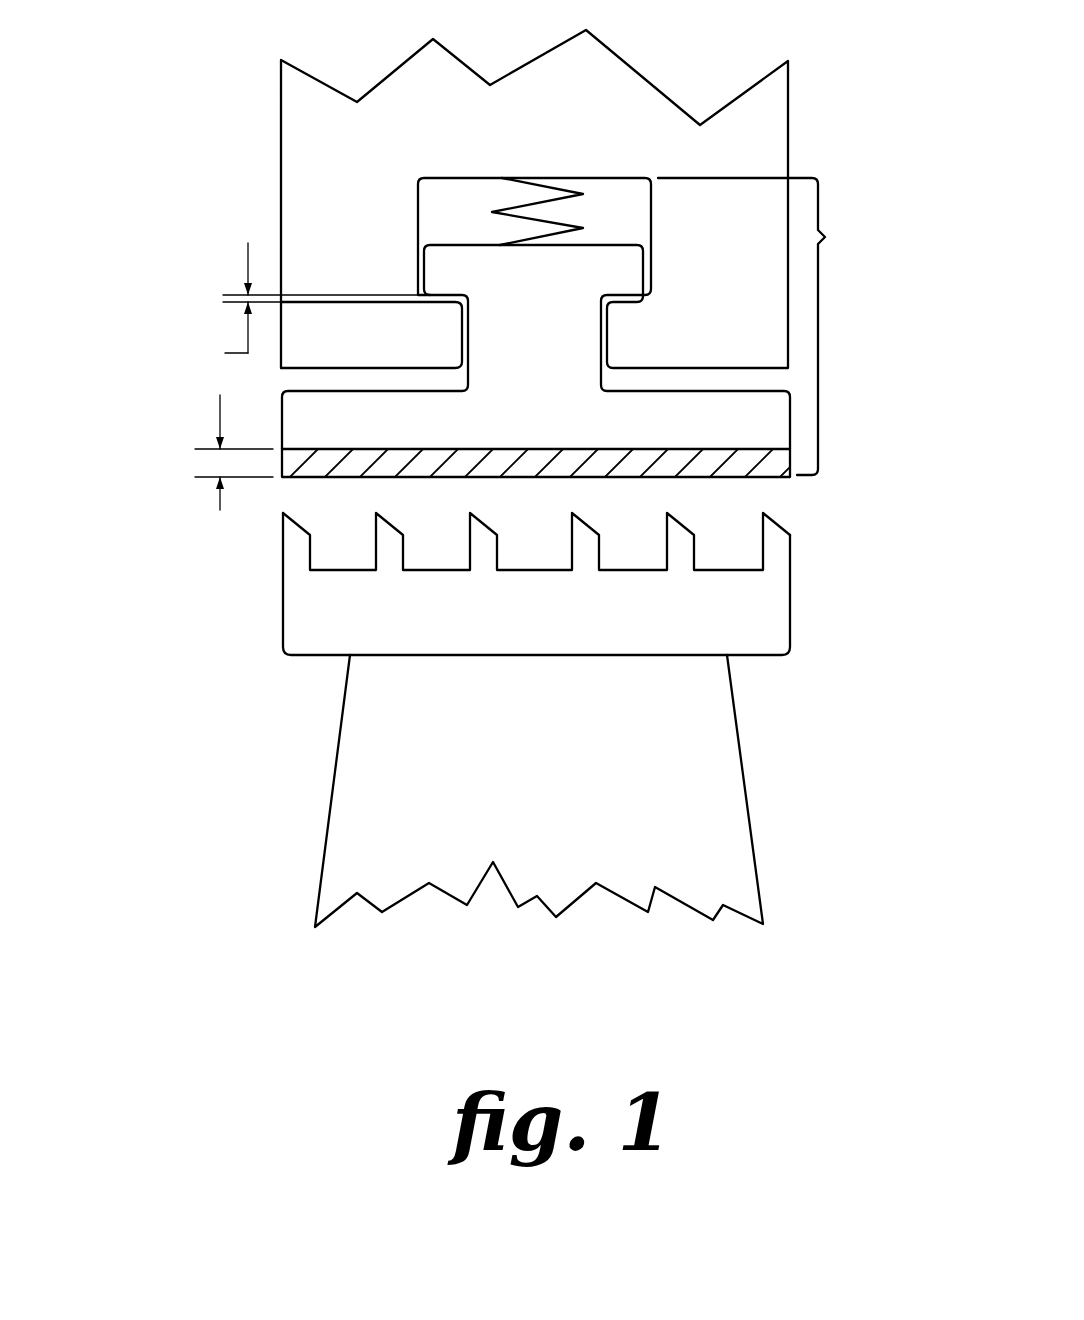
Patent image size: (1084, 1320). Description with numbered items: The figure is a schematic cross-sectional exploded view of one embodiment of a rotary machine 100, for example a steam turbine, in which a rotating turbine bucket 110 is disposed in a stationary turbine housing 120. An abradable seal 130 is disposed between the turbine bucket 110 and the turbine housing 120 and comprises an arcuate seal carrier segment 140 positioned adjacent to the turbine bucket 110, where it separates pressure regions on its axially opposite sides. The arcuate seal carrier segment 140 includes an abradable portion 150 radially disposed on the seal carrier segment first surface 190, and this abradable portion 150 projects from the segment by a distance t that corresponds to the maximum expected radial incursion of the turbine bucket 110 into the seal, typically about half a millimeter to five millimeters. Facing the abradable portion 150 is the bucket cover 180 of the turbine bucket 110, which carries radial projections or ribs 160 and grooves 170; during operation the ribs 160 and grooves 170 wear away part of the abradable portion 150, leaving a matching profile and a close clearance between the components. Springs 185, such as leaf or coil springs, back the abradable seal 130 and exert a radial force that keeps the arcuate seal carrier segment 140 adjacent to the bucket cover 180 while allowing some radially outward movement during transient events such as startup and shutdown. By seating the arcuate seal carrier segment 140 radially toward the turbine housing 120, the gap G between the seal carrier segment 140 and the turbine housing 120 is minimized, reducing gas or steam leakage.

The rotary machine 100 is at (155, 48).
The turbine bucket 110 is at (368, 853).
The turbine housing 120 is at (313, 178).
The abradable seal 130 is at (581, 327).
The arcuate seal carrier segment 140 is at (555, 328).
The abradable portion 150 is at (315, 460).
The ribs 160 is at (300, 545).
The grooves 170 is at (347, 571).
The bucket cover 180 is at (308, 633).
The springs 185 is at (492, 212).
The seal carrier segment first surface 190 is at (705, 447).
The gap G is at (308, 304).
The distance t is at (234, 452).